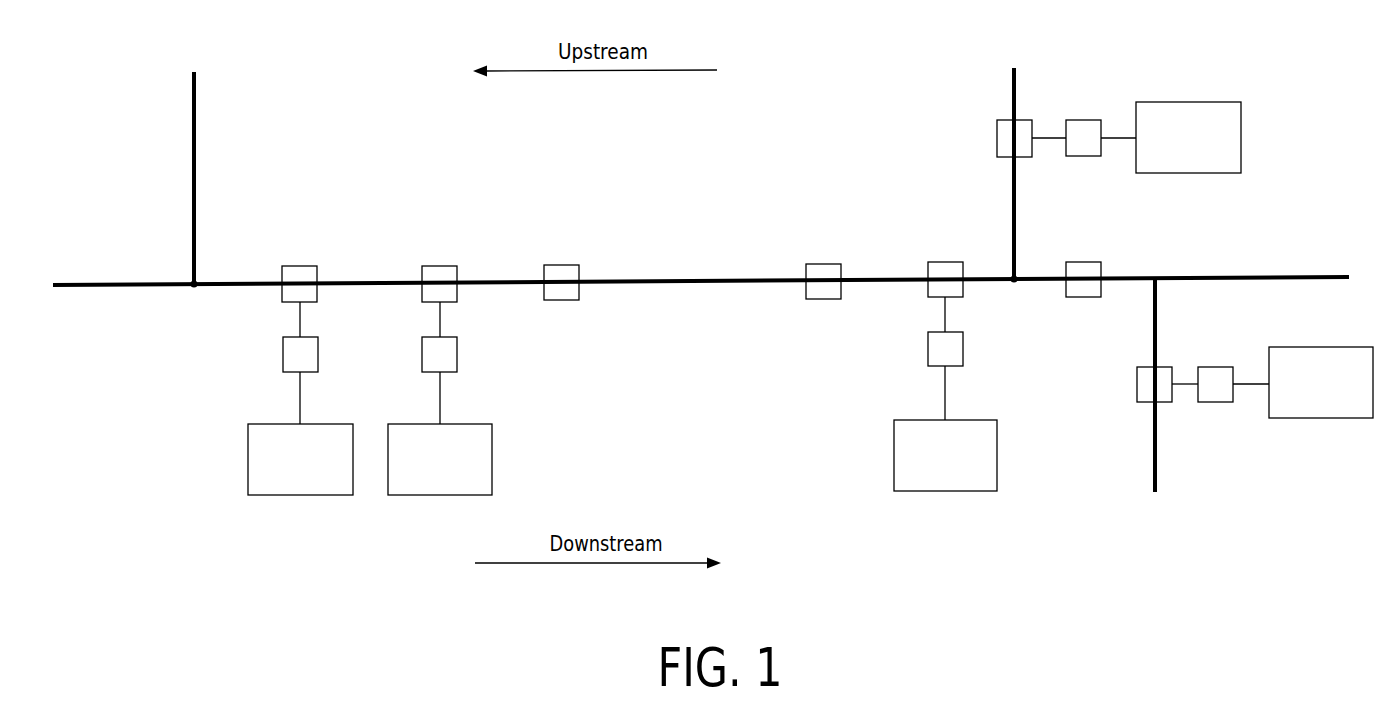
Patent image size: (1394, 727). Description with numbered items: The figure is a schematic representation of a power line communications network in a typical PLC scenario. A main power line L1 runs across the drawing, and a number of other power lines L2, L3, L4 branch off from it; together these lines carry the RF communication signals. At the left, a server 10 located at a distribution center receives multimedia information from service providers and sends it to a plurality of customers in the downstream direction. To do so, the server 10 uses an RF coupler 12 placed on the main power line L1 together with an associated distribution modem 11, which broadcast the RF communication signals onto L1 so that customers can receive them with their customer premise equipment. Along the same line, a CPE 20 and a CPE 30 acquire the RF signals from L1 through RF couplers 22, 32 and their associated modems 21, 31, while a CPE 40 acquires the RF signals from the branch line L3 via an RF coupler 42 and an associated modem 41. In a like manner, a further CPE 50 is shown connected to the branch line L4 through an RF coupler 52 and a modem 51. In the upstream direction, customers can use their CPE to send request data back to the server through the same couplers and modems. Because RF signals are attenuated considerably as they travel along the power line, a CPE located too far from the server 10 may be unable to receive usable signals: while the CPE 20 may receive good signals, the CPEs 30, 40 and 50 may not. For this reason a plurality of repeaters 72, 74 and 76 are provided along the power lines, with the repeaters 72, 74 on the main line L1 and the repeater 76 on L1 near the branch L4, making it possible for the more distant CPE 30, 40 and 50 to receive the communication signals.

The server 10 is at (248, 462).
The distribution modem 11 is at (283, 355).
The RF coupler 12 is at (300, 266).
The CPE 20 is at (492, 462).
The modem 21 is at (457, 355).
The RF coupler 22 is at (440, 266).
The CPE 30 is at (894, 459).
The modem 31 is at (963, 350).
The RF coupler 32 is at (945, 262).
The CPE 40 is at (1241, 135).
The modem 41 is at (1080, 120).
The RF coupler 42 is at (997, 135).
The CPE 50 is at (1322, 347).
The CPE modem 51 is at (1215, 367).
The RF coupler 52 is at (1130, 382).
The repeater 72 is at (560, 265).
The repeater 74 is at (823, 264).
The repeater 76 is at (1083, 262).
The main power line L1 is at (1293, 252).
The power line L2 is at (197, 119).
The power line L3 is at (1017, 93).
The power line L4 is at (1157, 467).